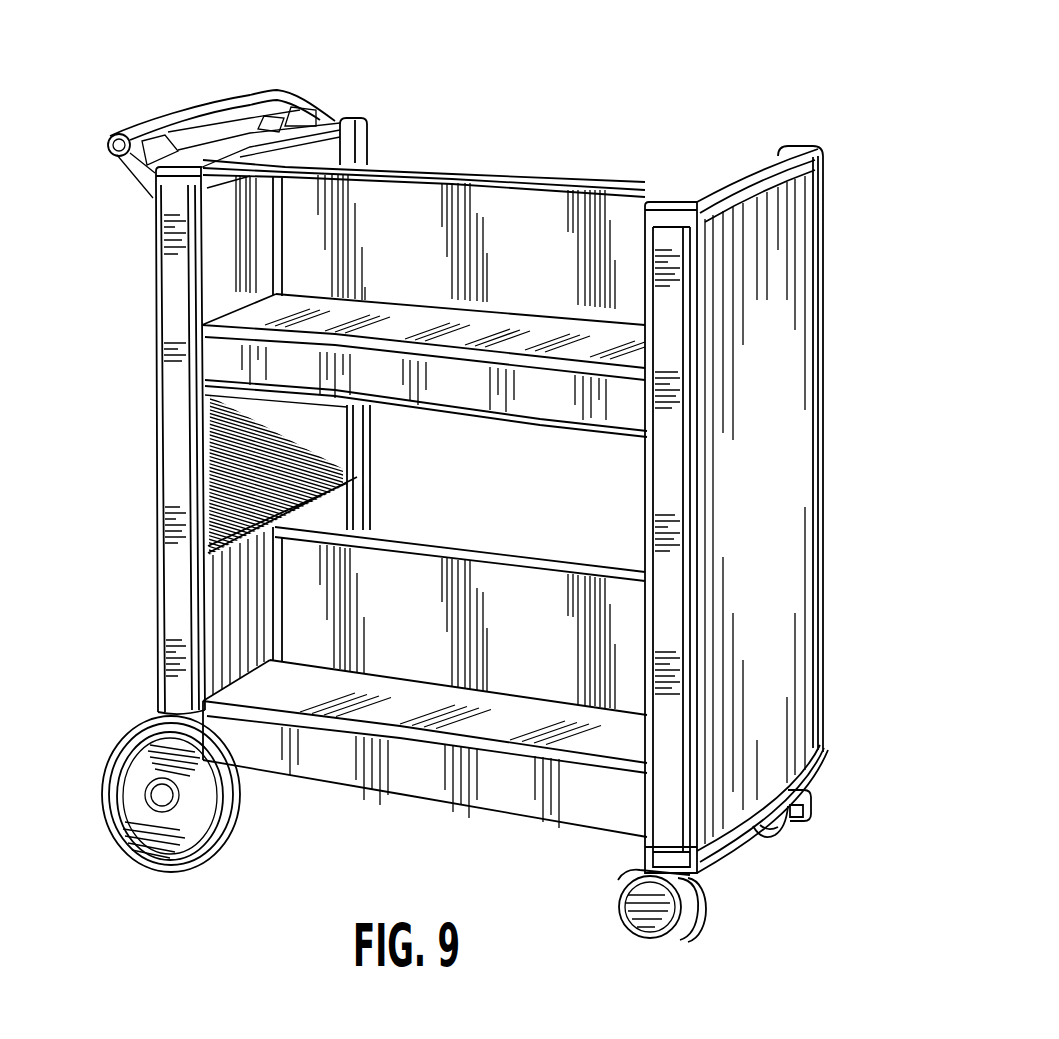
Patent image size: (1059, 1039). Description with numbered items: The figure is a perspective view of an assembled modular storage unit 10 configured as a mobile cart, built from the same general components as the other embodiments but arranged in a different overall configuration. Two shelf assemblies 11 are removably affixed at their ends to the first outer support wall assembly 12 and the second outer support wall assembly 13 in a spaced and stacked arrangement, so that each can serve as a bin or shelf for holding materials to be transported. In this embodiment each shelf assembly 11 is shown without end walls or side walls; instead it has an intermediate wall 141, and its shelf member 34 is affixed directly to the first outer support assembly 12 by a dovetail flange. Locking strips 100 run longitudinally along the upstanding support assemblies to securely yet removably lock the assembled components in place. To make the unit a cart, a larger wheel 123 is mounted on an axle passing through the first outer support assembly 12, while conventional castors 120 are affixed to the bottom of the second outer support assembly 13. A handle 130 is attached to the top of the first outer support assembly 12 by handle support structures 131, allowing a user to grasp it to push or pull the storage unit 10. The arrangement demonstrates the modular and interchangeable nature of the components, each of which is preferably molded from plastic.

The storage unit 10 is at (716, 73).
The shelf assembly 11 is at (586, 441).
The first outer support wall assembly 12 is at (218, 424).
The second outer support wall assembly 13 is at (783, 350).
The shelf member 34 is at (452, 397).
The locking strip 100 is at (373, 152).
The castor 120 is at (707, 913).
The wheel 123 is at (130, 805).
The handle 130 is at (203, 108).
The handle support structure 131 is at (292, 106).
The intermediate wall 141 is at (527, 205).